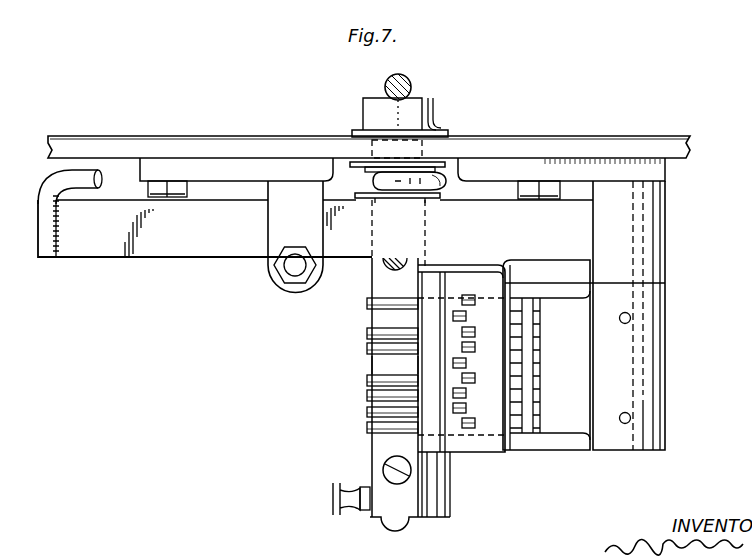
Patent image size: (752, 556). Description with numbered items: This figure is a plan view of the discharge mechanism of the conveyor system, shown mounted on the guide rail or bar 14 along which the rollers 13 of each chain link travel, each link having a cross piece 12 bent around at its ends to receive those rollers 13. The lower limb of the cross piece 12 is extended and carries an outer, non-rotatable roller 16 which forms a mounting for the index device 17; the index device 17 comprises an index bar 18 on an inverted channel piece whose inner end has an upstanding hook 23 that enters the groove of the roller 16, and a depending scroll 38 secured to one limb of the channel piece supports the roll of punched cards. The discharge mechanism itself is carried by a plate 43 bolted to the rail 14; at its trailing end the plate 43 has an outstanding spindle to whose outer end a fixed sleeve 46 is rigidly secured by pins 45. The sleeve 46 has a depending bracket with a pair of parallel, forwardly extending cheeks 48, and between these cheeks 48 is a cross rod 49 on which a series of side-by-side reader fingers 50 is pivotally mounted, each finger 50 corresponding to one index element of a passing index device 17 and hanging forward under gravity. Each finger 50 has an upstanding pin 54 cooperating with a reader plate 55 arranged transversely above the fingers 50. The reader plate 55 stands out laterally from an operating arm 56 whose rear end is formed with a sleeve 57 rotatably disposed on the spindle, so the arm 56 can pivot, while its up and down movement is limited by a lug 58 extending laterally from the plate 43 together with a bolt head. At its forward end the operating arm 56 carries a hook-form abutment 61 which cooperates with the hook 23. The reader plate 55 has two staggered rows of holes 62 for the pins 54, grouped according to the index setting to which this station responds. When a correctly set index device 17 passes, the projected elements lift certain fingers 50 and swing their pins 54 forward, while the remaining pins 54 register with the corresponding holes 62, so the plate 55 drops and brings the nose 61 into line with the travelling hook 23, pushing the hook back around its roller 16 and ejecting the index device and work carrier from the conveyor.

The cross piece 12 is at (412, 84).
The rollers 13 is at (428, 112).
The guide rail or bar 14 is at (137, 152).
The outer non-rotatable roller 16 is at (440, 166).
The index device 17 is at (362, 286).
The index bar 18 is at (378, 478).
The upstanding hook 23 is at (395, 178).
The depending scroll 38 is at (450, 507).
The plate 43 is at (201, 160).
The pins 45 is at (631, 318).
The fixed sleeve 46 is at (646, 401).
The cheeks 48 is at (571, 292).
The cross rod 49 is at (526, 381).
The reader fingers 50 is at (366, 346).
The upstanding pin 54 is at (458, 296).
The reader plate 55 is at (424, 379).
The operating arm 56 is at (236, 247).
The sleeve 57 is at (650, 239).
The lug 58 is at (272, 253).
The hook-form abutment 61 is at (70, 172).
The holes 62 is at (470, 327).